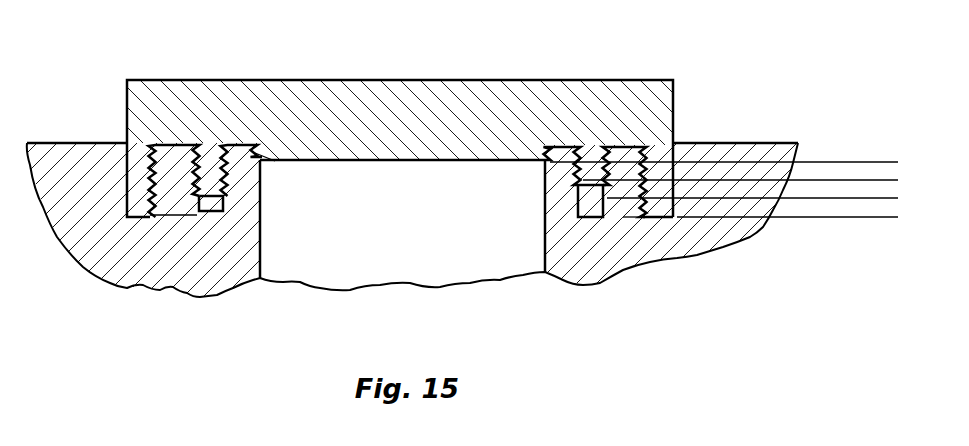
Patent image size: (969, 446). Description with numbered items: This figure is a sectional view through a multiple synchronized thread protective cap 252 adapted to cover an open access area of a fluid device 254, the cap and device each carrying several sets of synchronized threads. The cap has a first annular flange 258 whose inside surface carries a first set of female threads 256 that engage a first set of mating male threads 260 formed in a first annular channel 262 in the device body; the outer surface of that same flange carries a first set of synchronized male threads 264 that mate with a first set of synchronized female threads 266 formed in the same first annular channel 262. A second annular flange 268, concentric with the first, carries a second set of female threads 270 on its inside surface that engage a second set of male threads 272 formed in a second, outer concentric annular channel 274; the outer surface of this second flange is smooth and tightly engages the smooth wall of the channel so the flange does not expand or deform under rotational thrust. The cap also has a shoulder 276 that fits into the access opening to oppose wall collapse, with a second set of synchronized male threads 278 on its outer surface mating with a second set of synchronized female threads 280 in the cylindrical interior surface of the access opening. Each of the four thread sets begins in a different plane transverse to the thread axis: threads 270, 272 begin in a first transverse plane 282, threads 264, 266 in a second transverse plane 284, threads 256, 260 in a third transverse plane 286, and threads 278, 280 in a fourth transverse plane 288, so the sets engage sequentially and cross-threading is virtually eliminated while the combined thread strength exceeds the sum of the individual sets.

The multiple synchronized thread protective cap 252 is at (468, 112).
The fluid device 254 is at (600, 265).
The first set of female threads 256 is at (253, 140).
The first annular flange 258 is at (208, 163).
The first set of mating male threads 260 is at (135, 182).
The first annular channel 262 is at (216, 217).
The first set of synchronized male threads 264 is at (623, 147).
The first set of synchronized female threads 266 is at (590, 147).
The second annular flange 268 is at (140, 216).
The second set of female threads 270 is at (668, 217).
The second set of male threads 272 is at (640, 150).
The second annular channel 274 is at (170, 200).
The shoulder 276 is at (416, 158).
The second set of synchronized male threads 278 is at (562, 147).
The second set of synchronized female threads 280 is at (285, 162).
The first transverse plane 282 is at (857, 222).
The second transverse plane 284 is at (800, 219).
The third transverse plane 286 is at (878, 162).
The fourth transverse plane 288 is at (842, 180).